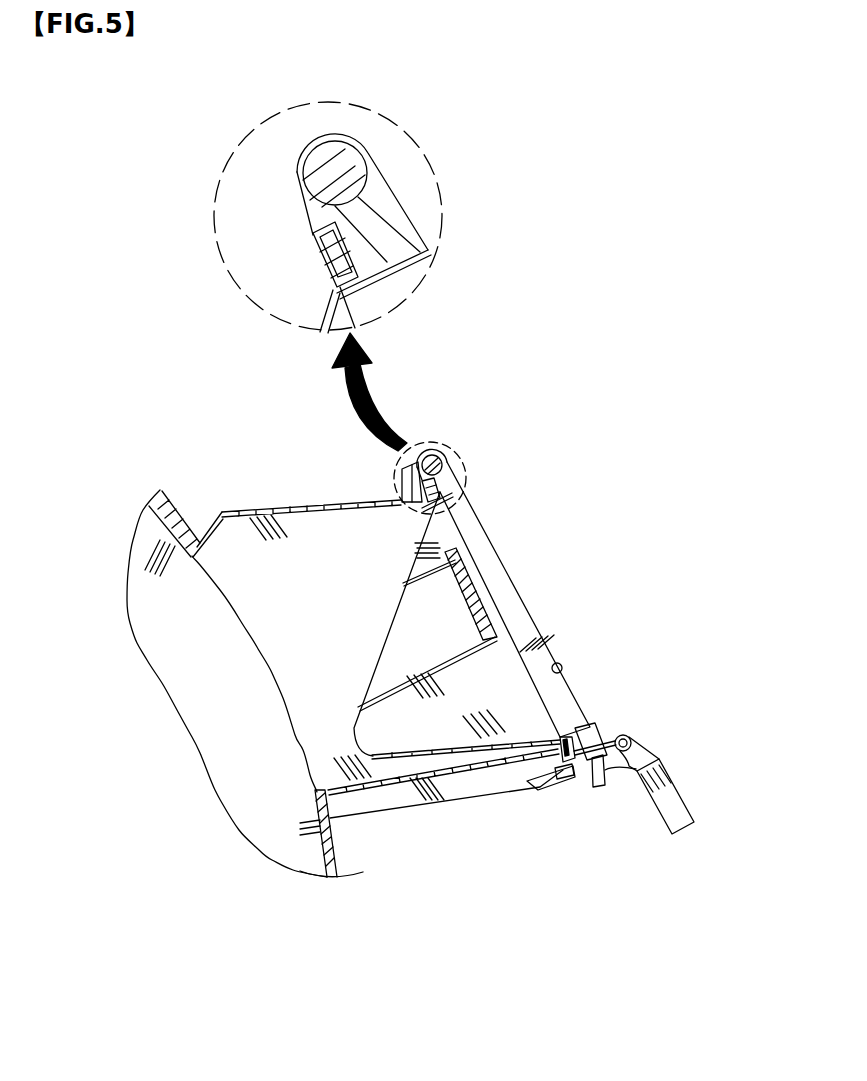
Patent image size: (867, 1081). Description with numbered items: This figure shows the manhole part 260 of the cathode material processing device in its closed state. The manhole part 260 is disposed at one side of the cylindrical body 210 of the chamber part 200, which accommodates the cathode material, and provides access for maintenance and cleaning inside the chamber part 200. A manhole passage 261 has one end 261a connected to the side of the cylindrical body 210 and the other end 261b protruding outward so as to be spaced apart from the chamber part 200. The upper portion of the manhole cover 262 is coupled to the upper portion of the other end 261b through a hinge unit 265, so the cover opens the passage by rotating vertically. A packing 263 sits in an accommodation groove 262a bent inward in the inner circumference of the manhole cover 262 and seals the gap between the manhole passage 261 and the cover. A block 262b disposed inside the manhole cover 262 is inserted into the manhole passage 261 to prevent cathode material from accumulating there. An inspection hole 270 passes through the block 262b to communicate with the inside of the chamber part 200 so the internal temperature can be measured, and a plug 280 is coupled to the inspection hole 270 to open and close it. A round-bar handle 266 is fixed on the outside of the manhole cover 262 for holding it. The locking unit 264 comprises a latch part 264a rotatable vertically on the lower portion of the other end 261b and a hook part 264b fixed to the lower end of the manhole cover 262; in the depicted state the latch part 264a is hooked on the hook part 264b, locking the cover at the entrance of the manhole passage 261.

The chamber part 200 is at (152, 692).
The cylindrical body 210 is at (333, 850).
The manhole part 260 is at (488, 398).
The manhole passage 261 is at (296, 507).
The one end of the manhole passage 261a is at (202, 537).
The other end of the manhole passage 261b is at (398, 492).
The manhole cover 262 is at (385, 198).
The accommodation groove 262a is at (353, 240).
The block 262b is at (357, 735).
The packing 263 is at (333, 267).
The locking unit 264 is at (608, 842).
The latch part 264a is at (645, 806).
The hook part 264b is at (569, 816).
The hinge unit 265 is at (350, 164).
The handle 266 is at (563, 663).
The inspection hole 270 is at (437, 657).
The plug 280 is at (467, 588).